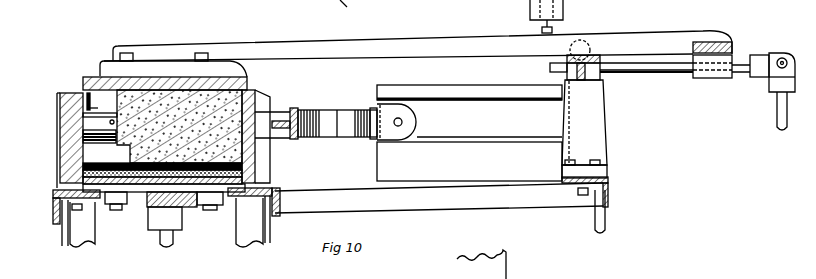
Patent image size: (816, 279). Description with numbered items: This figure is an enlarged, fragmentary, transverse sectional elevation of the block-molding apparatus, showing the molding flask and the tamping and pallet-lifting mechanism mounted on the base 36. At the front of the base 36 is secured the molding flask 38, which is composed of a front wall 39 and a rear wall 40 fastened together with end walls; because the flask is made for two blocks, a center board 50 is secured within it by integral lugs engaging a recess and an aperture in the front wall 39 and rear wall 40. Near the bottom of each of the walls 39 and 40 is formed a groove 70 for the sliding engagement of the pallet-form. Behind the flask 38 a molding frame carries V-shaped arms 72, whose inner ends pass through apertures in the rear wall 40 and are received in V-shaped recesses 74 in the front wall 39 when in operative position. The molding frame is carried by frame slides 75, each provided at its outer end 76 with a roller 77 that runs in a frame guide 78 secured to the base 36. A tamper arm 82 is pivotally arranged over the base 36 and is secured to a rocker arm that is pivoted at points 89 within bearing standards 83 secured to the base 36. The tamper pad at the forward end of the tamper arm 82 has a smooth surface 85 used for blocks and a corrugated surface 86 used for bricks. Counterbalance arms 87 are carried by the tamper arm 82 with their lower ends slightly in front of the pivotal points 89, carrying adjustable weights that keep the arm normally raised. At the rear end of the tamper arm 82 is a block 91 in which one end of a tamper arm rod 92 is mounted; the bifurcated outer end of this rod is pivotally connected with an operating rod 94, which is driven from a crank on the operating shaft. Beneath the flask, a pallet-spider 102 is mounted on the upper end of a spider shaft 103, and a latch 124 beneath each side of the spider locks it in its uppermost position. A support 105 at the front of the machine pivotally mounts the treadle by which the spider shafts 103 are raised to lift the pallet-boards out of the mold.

The base 36 is at (302, 206).
The molding flask 38 is at (58, 151).
The front wall 39 is at (80, 160).
The rear wall 40 is at (268, 156).
The center board 50 is at (63, 110).
The groove 70 is at (62, 180).
The V-shaped arms 72 is at (80, 140).
The V-shaped recesses 74 is at (83, 117).
The frame slides 75 is at (306, 114).
The outer end 76 is at (373, 112).
The roller 77 is at (417, 122).
The frame guide 78 is at (508, 143).
The tamper arm 82 is at (410, 45).
The bearing standards 83 is at (588, 107).
The smooth surface 85 is at (246, 87).
The corrugated surface 86 is at (98, 78).
The counterbalance arms 87 is at (551, 32).
The pivotal points 89 is at (587, 50).
The block 91 is at (712, 72).
The tamper arm rod 92 is at (682, 66).
The operating rod 94 is at (781, 115).
The pallet-spider 102 is at (147, 208).
The spider shaft 103 is at (172, 245).
The support 105 is at (62, 241).
The latch 124 is at (203, 208).